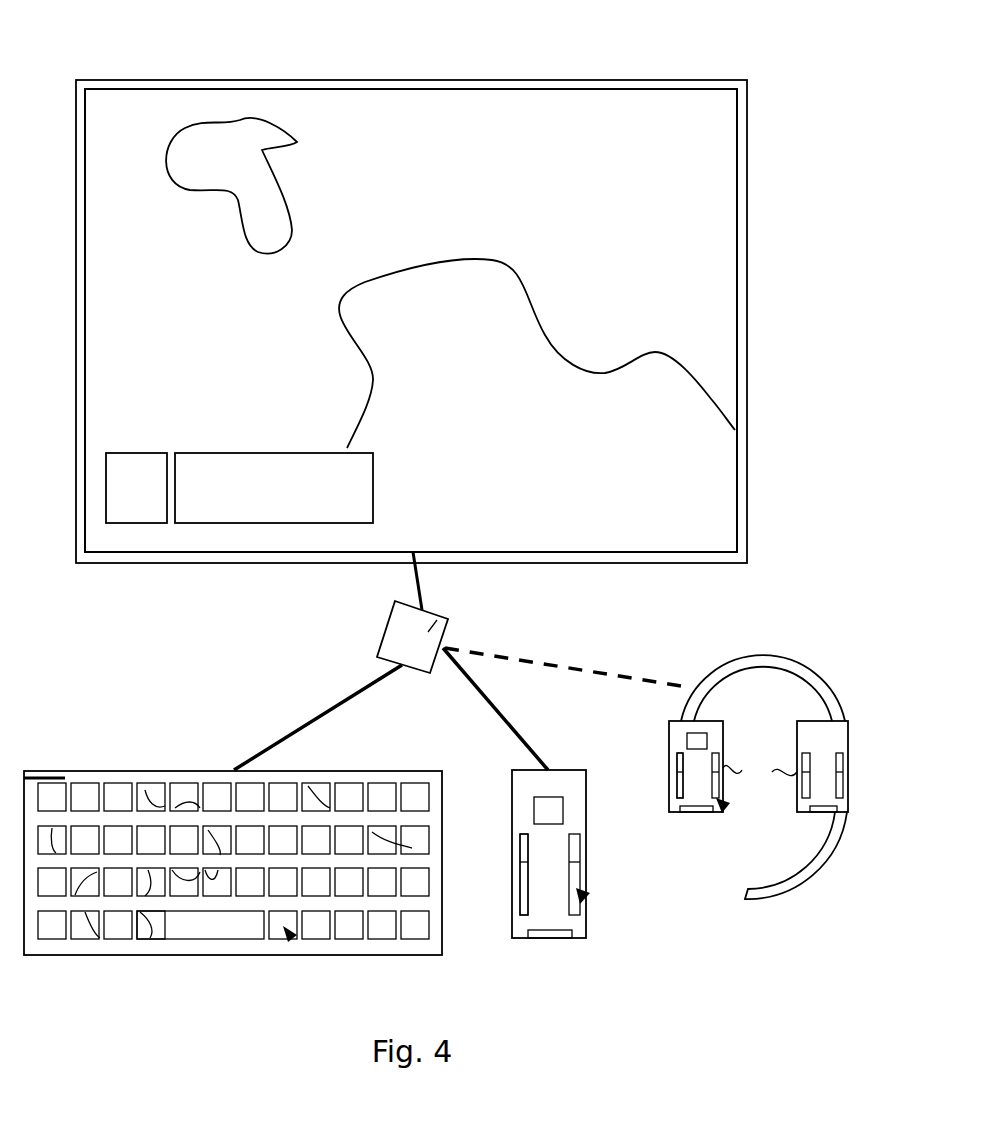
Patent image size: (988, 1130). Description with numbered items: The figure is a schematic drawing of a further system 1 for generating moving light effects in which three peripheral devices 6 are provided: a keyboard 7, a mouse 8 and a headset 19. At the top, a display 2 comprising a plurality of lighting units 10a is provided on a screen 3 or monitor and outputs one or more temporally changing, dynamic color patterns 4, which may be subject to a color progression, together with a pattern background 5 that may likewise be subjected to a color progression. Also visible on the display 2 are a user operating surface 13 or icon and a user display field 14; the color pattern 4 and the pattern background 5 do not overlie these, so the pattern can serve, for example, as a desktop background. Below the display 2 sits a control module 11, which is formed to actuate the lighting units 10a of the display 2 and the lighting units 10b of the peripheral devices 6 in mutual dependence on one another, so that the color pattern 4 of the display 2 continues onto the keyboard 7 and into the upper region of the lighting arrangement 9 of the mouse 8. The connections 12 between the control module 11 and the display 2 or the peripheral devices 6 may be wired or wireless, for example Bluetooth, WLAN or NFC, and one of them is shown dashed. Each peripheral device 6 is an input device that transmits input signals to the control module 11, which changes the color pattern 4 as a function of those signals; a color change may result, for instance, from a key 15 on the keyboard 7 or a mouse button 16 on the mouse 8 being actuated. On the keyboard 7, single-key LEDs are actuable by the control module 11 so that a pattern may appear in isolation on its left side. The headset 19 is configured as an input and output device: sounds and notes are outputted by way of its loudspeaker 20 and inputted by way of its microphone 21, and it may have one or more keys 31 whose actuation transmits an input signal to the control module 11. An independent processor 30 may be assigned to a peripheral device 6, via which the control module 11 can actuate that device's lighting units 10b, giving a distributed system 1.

The system 1 is at (59, 70).
The display 2 is at (353, 114).
The screen 3 is at (152, 84).
The color pattern 4 is at (258, 238).
The pattern background 5 is at (575, 116).
The peripheral devices 6 is at (436, 812).
The keyboard 7 is at (65, 948).
The mouse 8 is at (580, 786).
The lighting arrangement 9 is at (296, 942).
The lighting units 10a is at (458, 128).
The lighting unit 10b is at (152, 920).
The control module 11 is at (450, 621).
The connections 12 is at (412, 568).
The user operating surface 13 is at (130, 510).
The user display field 14 is at (190, 510).
The key 15 is at (203, 922).
The mouse button 16 is at (556, 818).
The headset 19 is at (758, 663).
The loudspeaker 20 is at (760, 770).
The microphone 21 is at (748, 898).
The processor 30 is at (700, 812).
The button 31 is at (700, 742).